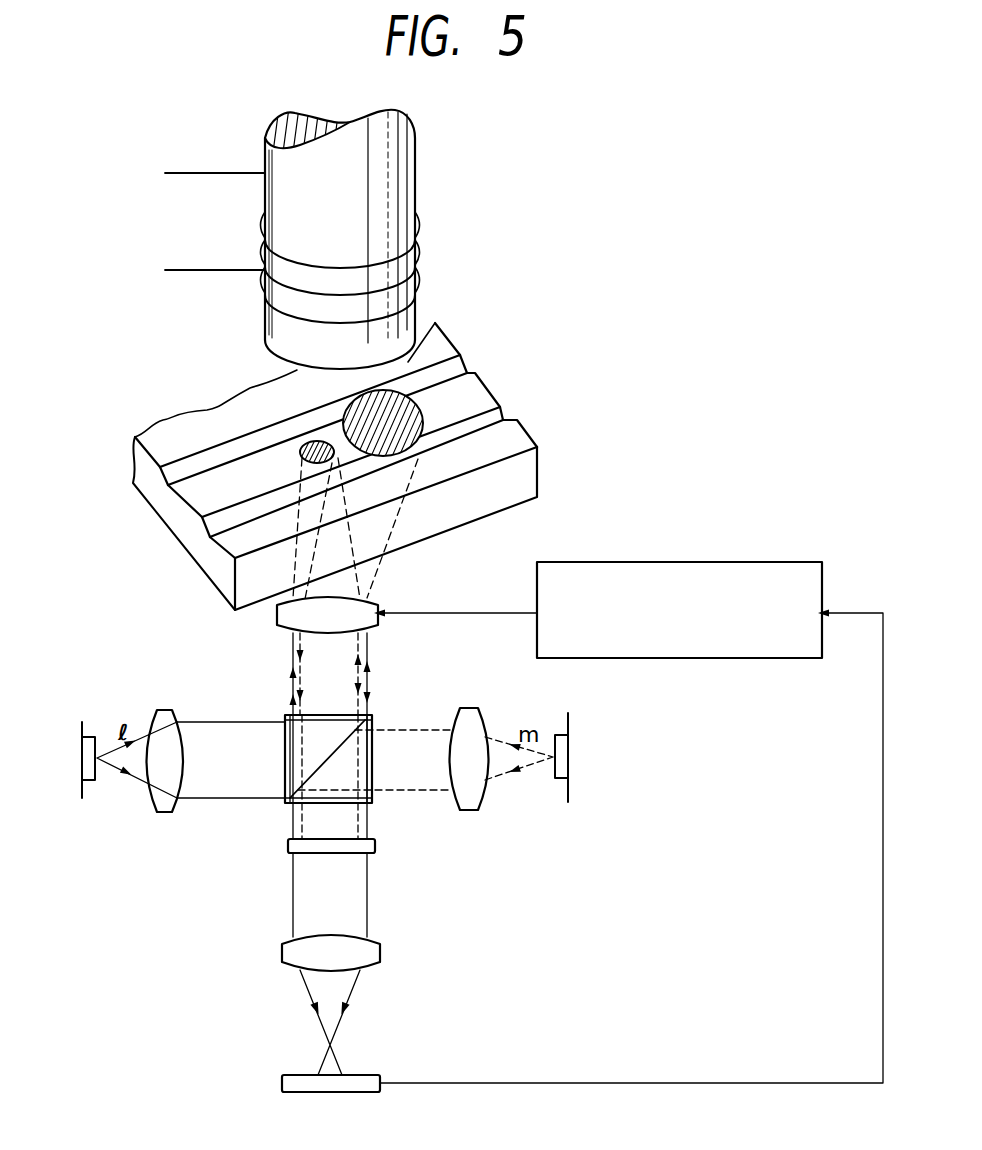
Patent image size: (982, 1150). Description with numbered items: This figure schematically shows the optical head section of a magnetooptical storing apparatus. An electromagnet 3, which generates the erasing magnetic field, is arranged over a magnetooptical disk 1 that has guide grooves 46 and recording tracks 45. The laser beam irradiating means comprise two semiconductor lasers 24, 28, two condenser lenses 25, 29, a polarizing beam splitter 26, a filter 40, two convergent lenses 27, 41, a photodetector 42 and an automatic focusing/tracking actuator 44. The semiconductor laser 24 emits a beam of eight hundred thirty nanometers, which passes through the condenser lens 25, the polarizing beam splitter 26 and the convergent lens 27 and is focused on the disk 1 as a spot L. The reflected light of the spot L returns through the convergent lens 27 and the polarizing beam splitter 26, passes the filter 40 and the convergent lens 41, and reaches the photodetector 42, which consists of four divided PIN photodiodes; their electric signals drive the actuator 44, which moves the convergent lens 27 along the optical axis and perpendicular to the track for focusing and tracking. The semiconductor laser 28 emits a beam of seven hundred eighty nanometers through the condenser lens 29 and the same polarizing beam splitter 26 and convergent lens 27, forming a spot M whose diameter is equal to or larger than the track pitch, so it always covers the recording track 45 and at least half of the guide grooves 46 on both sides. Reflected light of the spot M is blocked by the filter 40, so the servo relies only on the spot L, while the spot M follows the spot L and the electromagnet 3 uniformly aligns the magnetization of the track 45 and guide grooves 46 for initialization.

The magnetooptical disk 1 is at (170, 510).
The electromagnet 3 is at (380, 197).
The semiconductor laser 24 is at (90, 733).
The condenser lens 25 is at (170, 710).
The polarizing beam splitter 26 is at (303, 747).
The convergent lens 27 is at (277, 613).
The semiconductor laser 28 is at (570, 750).
The condenser lens 29 is at (470, 710).
The filter 40 is at (375, 845).
The convergent lens 41 is at (375, 953).
The photodetector 42 is at (367, 1077).
The automatic focusing/tracking actuator 44 is at (737, 562).
The recording track 45 is at (480, 397).
The guide grooves 46 is at (493, 418).
The spot L is at (313, 441).
The spot M is at (420, 368).